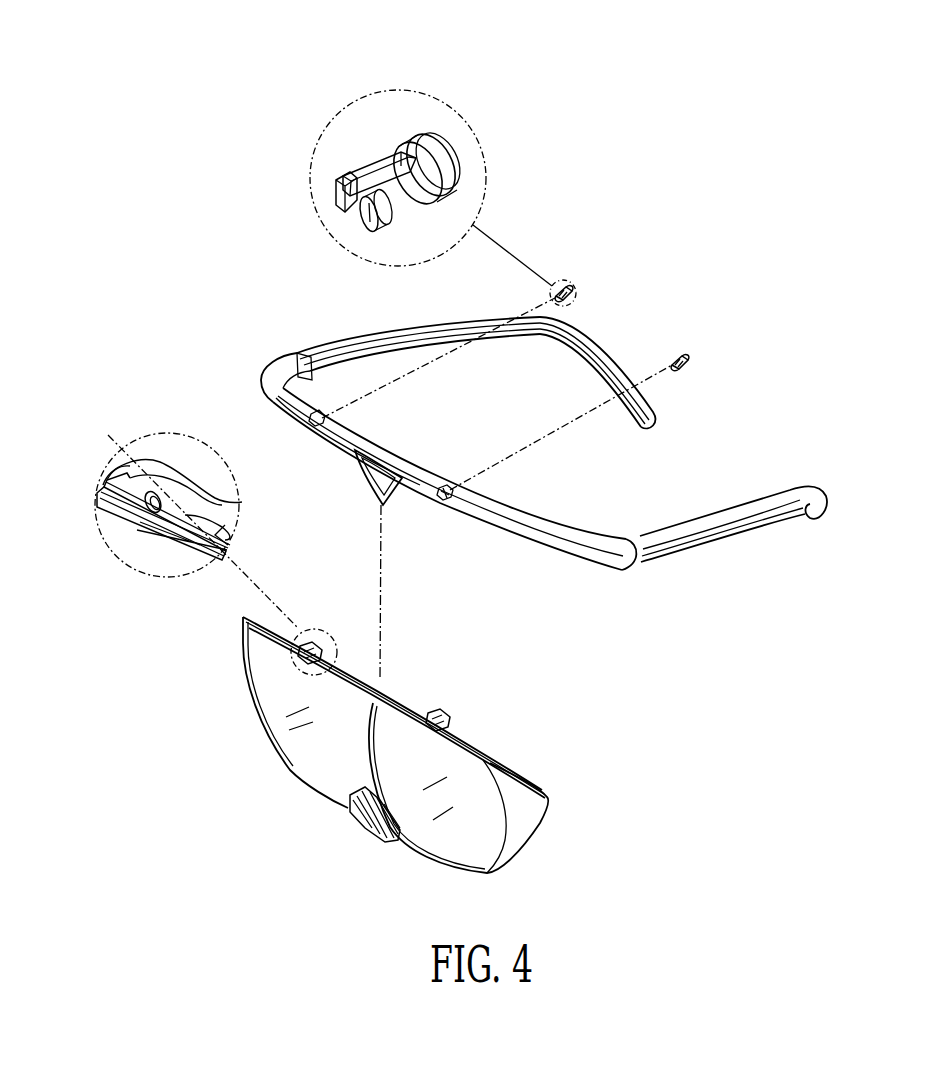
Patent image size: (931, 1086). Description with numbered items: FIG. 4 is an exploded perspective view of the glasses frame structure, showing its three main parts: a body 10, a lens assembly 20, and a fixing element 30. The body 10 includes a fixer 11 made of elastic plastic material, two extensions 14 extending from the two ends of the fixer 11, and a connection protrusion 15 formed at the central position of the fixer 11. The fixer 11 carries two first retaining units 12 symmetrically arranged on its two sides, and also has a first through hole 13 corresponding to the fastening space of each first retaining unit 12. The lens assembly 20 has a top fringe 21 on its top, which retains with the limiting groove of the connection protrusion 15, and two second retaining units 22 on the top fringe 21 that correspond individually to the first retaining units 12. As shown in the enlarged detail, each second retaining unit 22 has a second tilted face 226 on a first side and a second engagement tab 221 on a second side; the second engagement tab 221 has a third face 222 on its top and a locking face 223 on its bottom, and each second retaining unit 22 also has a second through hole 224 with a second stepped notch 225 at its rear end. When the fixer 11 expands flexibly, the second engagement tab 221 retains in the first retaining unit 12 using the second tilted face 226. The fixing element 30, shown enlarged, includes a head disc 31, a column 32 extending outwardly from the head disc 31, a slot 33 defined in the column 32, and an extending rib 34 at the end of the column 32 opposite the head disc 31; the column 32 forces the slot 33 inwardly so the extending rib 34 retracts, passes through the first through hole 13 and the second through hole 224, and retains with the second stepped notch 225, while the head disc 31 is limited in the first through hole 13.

The body 10 is at (748, 414).
The fixer 11 is at (297, 350).
The first retaining unit 12 is at (270, 403).
The first through hole 13 is at (322, 430).
The extension 14 is at (590, 358).
The connection protrusion 15 is at (393, 506).
The lens assembly 20 is at (467, 753).
The top fringe 21 is at (383, 698).
The second retaining unit 22 is at (310, 630).
The second engagement tab 221 is at (106, 475).
The third face 222 is at (125, 452).
The locking face 223 is at (112, 500).
The second through hole 224 is at (217, 501).
The second stepped notch 225 is at (112, 521).
The second tilted face 226 is at (230, 527).
The fixing element 30 is at (355, 137).
The head disc 31 is at (433, 135).
The column 32 is at (408, 188).
The slot 33 is at (362, 214).
The extending rib 34 is at (338, 176).